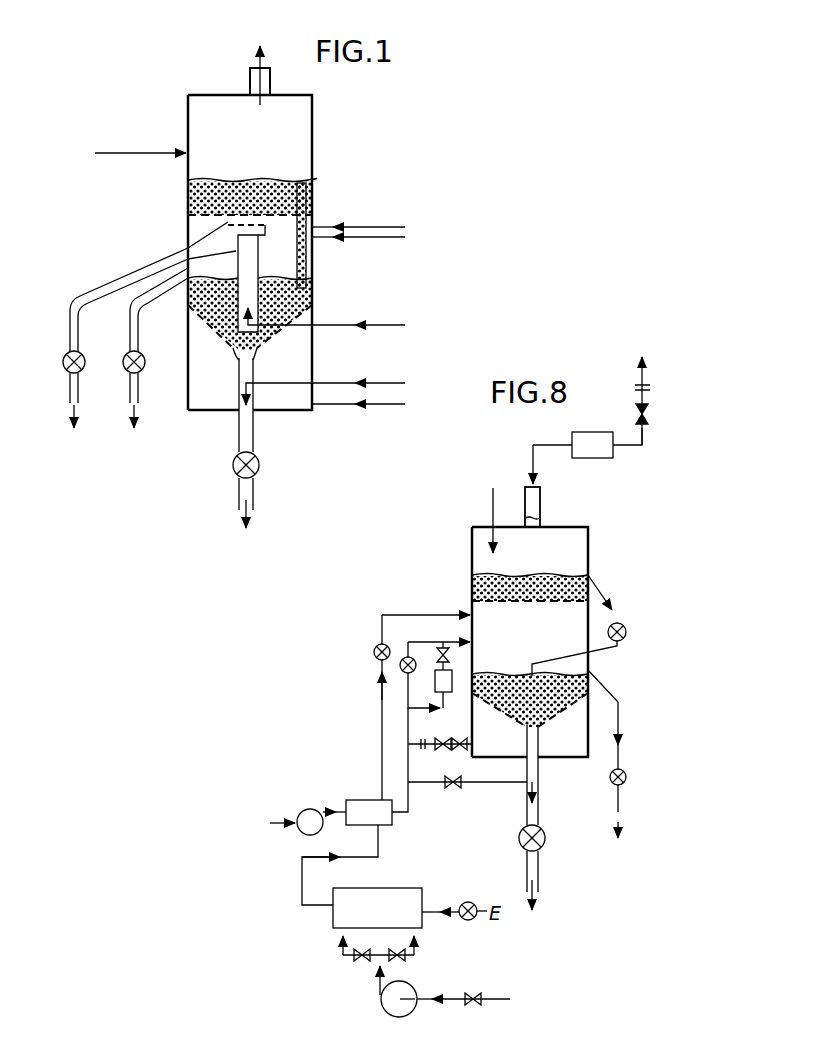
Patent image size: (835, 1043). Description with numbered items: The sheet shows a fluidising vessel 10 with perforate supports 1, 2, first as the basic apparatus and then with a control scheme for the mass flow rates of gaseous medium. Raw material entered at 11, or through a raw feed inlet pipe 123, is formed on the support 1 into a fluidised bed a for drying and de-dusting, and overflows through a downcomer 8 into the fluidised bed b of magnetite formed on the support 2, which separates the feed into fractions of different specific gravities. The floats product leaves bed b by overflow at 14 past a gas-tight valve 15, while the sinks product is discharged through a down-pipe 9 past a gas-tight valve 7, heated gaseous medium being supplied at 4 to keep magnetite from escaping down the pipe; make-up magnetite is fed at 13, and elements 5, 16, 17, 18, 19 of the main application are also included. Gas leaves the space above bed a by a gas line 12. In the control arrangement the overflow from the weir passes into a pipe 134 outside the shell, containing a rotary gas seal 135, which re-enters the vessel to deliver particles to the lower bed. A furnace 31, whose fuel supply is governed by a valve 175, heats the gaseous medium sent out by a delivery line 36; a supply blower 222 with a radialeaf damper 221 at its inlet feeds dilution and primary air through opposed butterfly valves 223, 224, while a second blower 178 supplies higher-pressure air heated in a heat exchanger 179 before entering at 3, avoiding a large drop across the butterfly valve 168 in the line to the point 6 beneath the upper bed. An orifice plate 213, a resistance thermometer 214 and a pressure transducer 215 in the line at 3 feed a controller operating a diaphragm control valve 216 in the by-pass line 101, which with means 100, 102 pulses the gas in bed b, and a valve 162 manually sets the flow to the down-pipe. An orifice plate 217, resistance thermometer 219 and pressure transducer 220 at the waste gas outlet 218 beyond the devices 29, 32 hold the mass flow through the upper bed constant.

In FIG. 1, the perforate support 1 is at (190, 210).
In FIG. 1, the perforate support 2 is at (207, 328).
In FIG. 1, the gas line entry point 3 is at (378, 406).
In FIG. 8, the gas line entry point 3 is at (462, 748).
In FIG. 1, the heated gaseous medium supply 4 is at (385, 383).
In FIG. 8, the heated gaseous medium supply 4 is at (513, 790).
In FIG. 1, the element of main application 5 is at (390, 325).
In FIG. 1, the heated gaseous medium supply point 6 is at (372, 227).
In FIG. 8, the heated gaseous medium supply point 6 is at (428, 615).
In FIG. 1, the gas-tight valve 7 is at (232, 467).
In FIG. 8, the gas-tight valve 7 is at (546, 840).
In FIG. 1, the downcomer 8 is at (308, 195).
In FIG. 1, the down-pipe 9 is at (237, 360).
In FIG. 1, the fluidising vessel 10 is at (314, 133).
In FIG. 8, the fluidising vessel 10 is at (597, 673).
In FIG. 1, the raw material inlet 11 is at (126, 153).
In FIG. 1, the gas line 12 is at (250, 80).
In FIG. 8, the gas line 12 is at (535, 468).
In FIG. 1, the discrete solid particle feed 13 is at (372, 240).
In FIG. 1, the overflow 14 is at (187, 282).
In FIG. 1, the gas-tight valve 15 is at (124, 368).
In FIG. 8, the gas-tight valve 15 is at (610, 780).
In FIG. 1, the element of main application 16 is at (260, 300).
In FIG. 1, the element of main application 17 is at (238, 224).
In FIG. 1, the element of main application 18 is at (190, 248).
In FIG. 1, the element of main application 19 is at (82, 360).
In FIG. 1, the fluidised bed a is at (277, 183).
In FIG. 8, the fluidised bed a is at (538, 578).
In FIG. 1, the fluidised bed b is at (218, 332).
In FIG. 8, the fluidised bed b is at (556, 700).
In FIG. 8, the device 29 is at (616, 465).
In FIG. 8, the device 32 is at (600, 458).
In FIG. 8, the furnace 31 is at (377, 908).
In FIG. 8, the delivery line 36 is at (382, 752).
In FIG. 8, the pulsing means 100 is at (435, 680).
In FIG. 8, the by-pass line 101 is at (410, 710).
In FIG. 8, the pulsing means 102 is at (452, 658).
In FIG. 8, the raw feed inlet pipe 123 is at (493, 509).
In FIG. 8, the pipe 134 is at (607, 603).
In FIG. 8, the rotary gas seal 135 is at (626, 638).
In FIG. 8, the valve 162 is at (460, 786).
In FIG. 8, the butterfly valve 168 is at (378, 644).
In FIG. 8, the diaphragm valve 175 is at (470, 901).
In FIG. 8, the blower 178 is at (301, 811).
In FIG. 8, the heat exchanger 179 is at (356, 800).
In FIG. 8, the orifice plate 213 is at (421, 752).
In FIG. 8, the resistance thermometer 214 is at (442, 752).
In FIG. 8, the pressure transducer 215 is at (468, 746).
In FIG. 8, the diaphragm control valve 216 is at (400, 660).
In FIG. 8, the orifice plate 217 is at (651, 387).
In FIG. 8, the waste gas outlet 218 is at (644, 372).
In FIG. 8, the resistance thermometer 219 is at (649, 410).
In FIG. 8, the pressure transducer 220 is at (647, 424).
In FIG. 8, the radialeaf damper 221 is at (476, 1006).
In FIG. 8, the supply blower 222 is at (386, 1010).
In FIG. 8, the butterfly valve 223 is at (362, 962).
In FIG. 8, the butterfly valve 224 is at (408, 958).